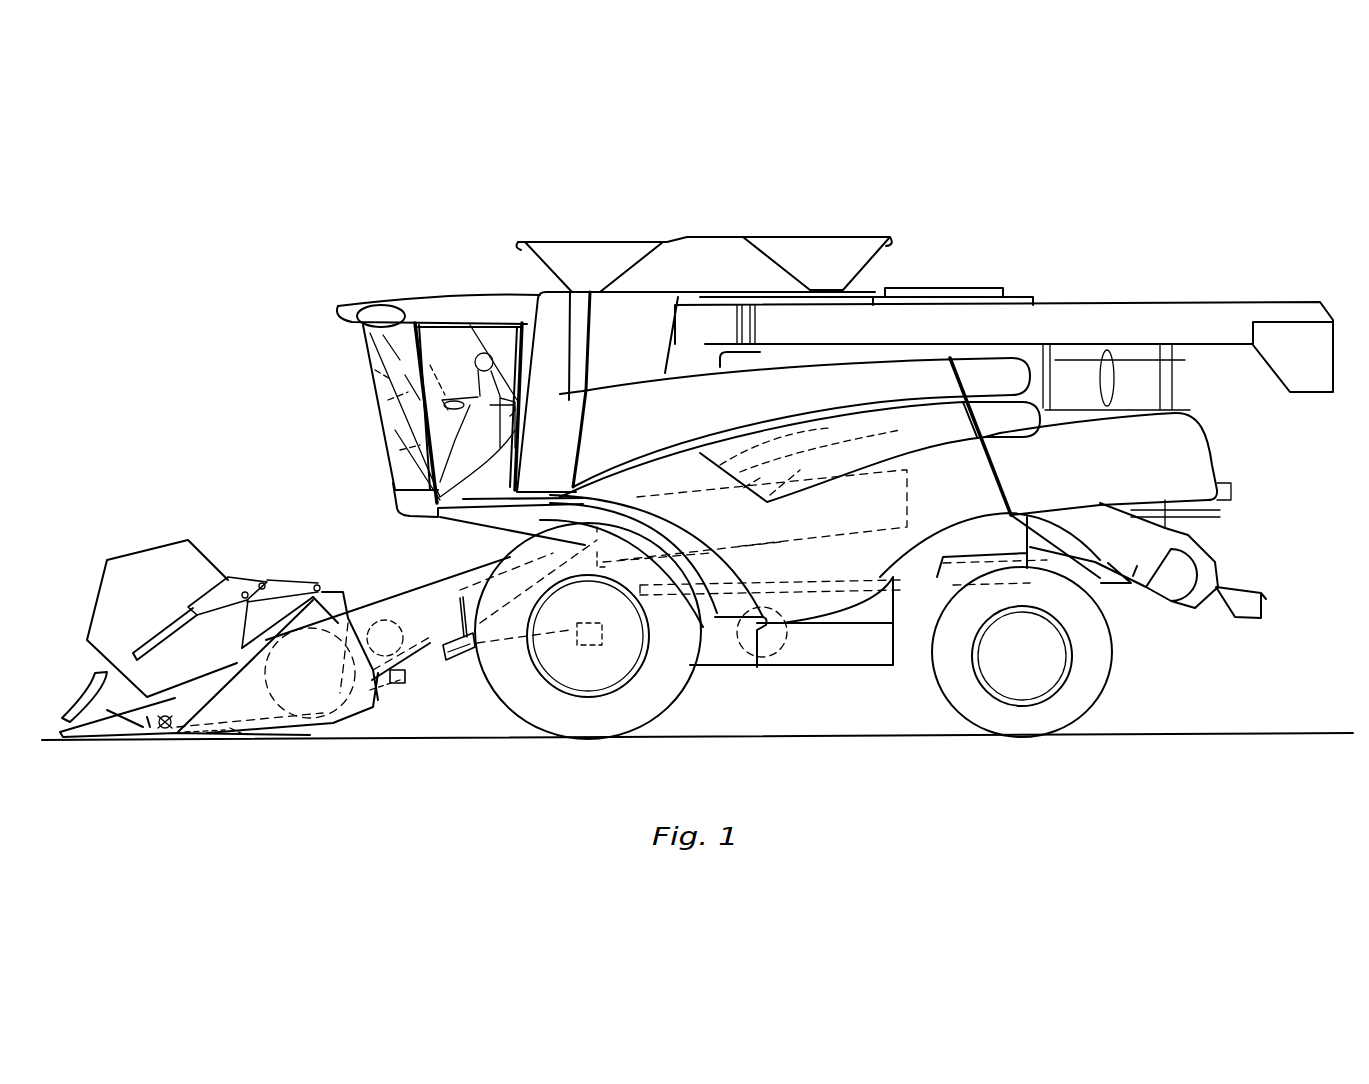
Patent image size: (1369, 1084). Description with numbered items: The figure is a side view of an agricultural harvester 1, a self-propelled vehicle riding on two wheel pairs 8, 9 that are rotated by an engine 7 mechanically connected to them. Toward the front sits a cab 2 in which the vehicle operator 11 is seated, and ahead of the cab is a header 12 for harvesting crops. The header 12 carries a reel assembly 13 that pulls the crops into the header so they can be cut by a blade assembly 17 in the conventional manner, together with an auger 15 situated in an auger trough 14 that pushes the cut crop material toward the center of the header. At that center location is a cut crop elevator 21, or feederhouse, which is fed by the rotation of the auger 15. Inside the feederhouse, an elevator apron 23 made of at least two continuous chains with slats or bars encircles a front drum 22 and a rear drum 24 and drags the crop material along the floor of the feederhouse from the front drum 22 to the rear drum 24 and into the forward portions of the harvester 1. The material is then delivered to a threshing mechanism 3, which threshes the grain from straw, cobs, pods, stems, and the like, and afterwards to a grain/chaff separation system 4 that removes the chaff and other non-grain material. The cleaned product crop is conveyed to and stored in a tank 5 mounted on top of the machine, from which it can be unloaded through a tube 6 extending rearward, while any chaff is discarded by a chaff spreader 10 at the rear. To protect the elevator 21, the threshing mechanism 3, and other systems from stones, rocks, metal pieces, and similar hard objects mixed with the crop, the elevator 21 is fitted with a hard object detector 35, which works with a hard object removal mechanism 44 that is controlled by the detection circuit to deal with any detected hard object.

The agricultural harvester 1 is at (1068, 233).
The cab 2 is at (415, 297).
The threshing mechanism 3 is at (680, 492).
The grain/chaff separation system 4 is at (862, 578).
The tank 5 is at (815, 240).
The tube 6 is at (1157, 303).
The engine 7 is at (965, 288).
The wheel pair 8 is at (700, 693).
The wheel pair 9 is at (935, 700).
The chaff spreader 10 is at (1211, 552).
The vehicle operator 11 is at (507, 328).
The header 12 is at (267, 742).
The reel assembly 13 is at (187, 540).
The auger trough 14 is at (260, 720).
The auger 15 is at (312, 717).
The blade assembly 17 is at (195, 742).
The cut crop elevator 21 is at (413, 597).
The front drum 22 is at (380, 618).
The elevator apron 23 is at (445, 640).
The rear drum 24 is at (580, 538).
The hard object detector 35 is at (408, 696).
The hard object removal mechanism 44 is at (460, 670).